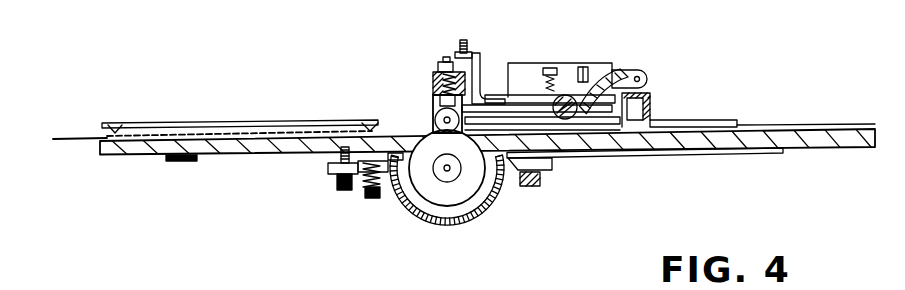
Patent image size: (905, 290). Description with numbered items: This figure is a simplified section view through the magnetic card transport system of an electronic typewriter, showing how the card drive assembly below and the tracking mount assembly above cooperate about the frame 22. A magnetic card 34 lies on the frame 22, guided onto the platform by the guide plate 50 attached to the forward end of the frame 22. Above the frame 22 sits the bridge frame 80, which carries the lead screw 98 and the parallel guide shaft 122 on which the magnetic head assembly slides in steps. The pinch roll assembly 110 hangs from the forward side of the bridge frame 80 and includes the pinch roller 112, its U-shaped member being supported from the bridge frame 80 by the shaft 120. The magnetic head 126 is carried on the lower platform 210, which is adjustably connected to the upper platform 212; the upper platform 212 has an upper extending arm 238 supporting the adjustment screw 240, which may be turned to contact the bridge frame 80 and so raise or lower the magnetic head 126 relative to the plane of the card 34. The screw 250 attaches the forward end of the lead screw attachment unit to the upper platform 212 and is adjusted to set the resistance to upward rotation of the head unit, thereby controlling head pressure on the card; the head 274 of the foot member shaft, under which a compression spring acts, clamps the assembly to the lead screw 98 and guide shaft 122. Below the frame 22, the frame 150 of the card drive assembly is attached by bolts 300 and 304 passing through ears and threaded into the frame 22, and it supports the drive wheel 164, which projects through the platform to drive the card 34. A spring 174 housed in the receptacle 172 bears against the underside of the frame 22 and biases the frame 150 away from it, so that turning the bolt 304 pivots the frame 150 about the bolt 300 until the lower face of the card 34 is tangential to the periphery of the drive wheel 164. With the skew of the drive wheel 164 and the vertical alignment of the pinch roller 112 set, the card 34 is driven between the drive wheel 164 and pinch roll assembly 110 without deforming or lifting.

The frame 22 is at (238, 148).
The magnetic card 34 is at (61, 137).
The guide plate 50 is at (200, 126).
The bridge frame 80 is at (652, 100).
The lead screw 98 is at (607, 74).
The pinch roll assembly 110 is at (428, 86).
The pinch roller 112 is at (437, 117).
The shaft 120 is at (436, 72).
The guide shaft 122 is at (647, 78).
The magnetic head 126 is at (543, 170).
The frame 150 is at (480, 221).
The drive wheel 164 is at (452, 195).
The receptacle 172 is at (370, 198).
The spring 174 is at (363, 192).
The lower platform 210 is at (522, 110).
The upper platform 212 is at (521, 97).
The upper extending arm 238 is at (477, 53).
The adjustment screw 240 is at (463, 40).
The screw 250 is at (549, 68).
The head 274 is at (584, 67).
The bolt 300 is at (530, 186).
The bolt 304 is at (337, 183).